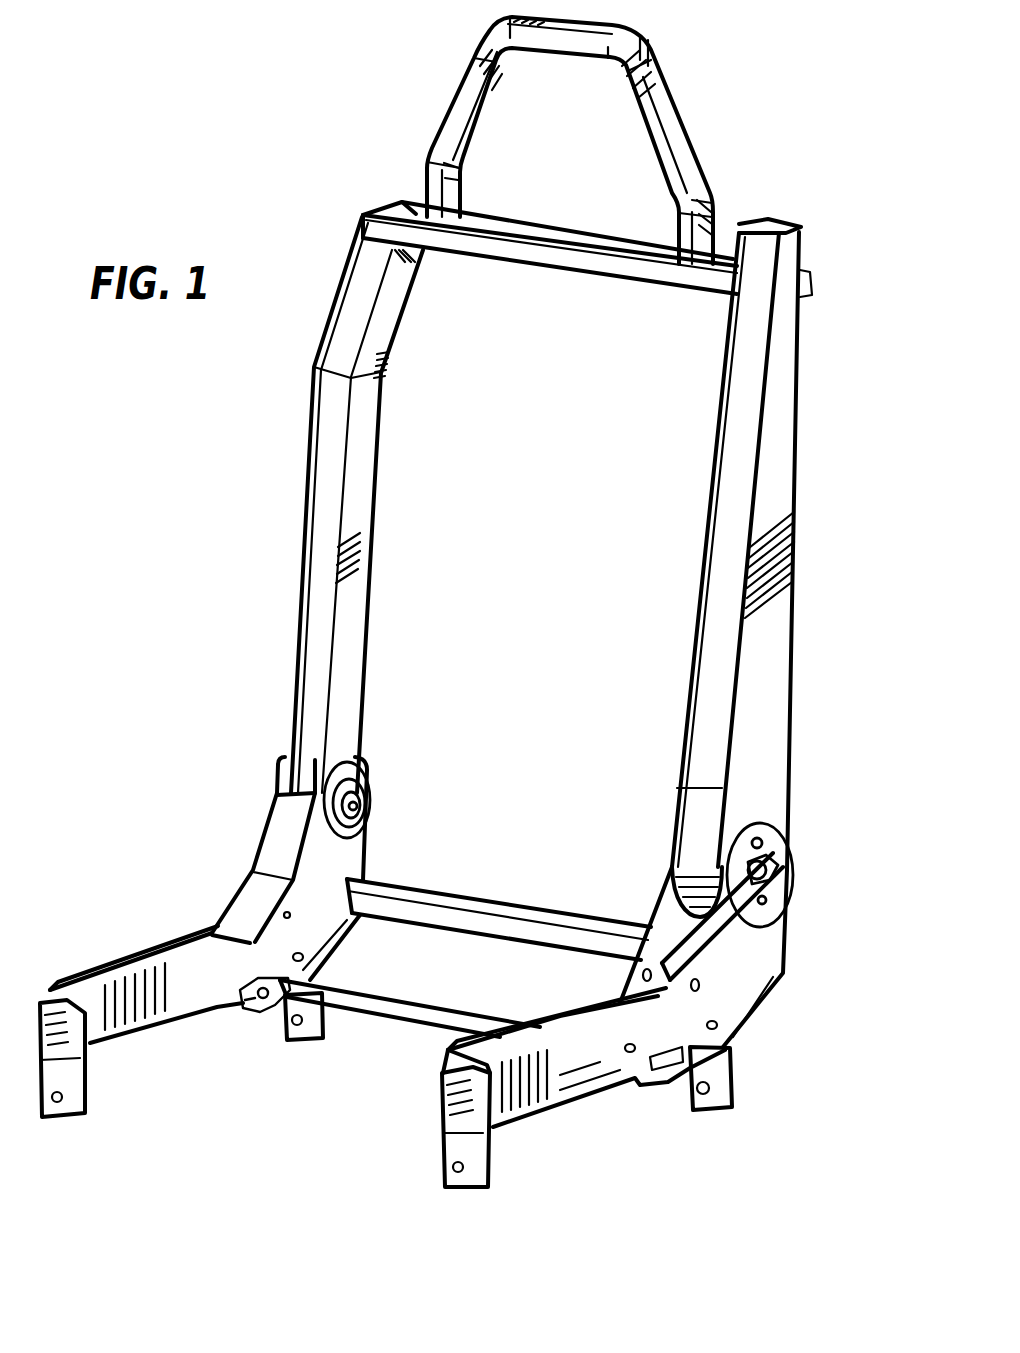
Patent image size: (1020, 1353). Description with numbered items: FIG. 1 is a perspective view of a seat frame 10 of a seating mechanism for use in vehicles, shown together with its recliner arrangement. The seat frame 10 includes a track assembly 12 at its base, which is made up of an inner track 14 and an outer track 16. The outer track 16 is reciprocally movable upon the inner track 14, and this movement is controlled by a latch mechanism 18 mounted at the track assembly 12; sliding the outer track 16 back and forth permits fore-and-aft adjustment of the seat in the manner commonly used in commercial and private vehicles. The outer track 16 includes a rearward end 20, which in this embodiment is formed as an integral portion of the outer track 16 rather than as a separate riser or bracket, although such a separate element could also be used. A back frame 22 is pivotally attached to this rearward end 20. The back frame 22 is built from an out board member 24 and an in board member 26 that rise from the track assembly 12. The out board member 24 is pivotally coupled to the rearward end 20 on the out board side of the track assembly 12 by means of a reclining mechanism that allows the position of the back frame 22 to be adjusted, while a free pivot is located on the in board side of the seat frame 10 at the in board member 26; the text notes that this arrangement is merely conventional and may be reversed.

The seat frame 10 is at (852, 101).
The track assembly 12 is at (584, 1131).
The inner track 14 is at (467, 1153).
The outer track 16 is at (586, 1090).
The latch mechanism 18 is at (260, 1021).
The rearward end 20 is at (793, 917).
The back frame 22 is at (800, 572).
The out board member 24 is at (773, 800).
The in board member 26 is at (343, 741).